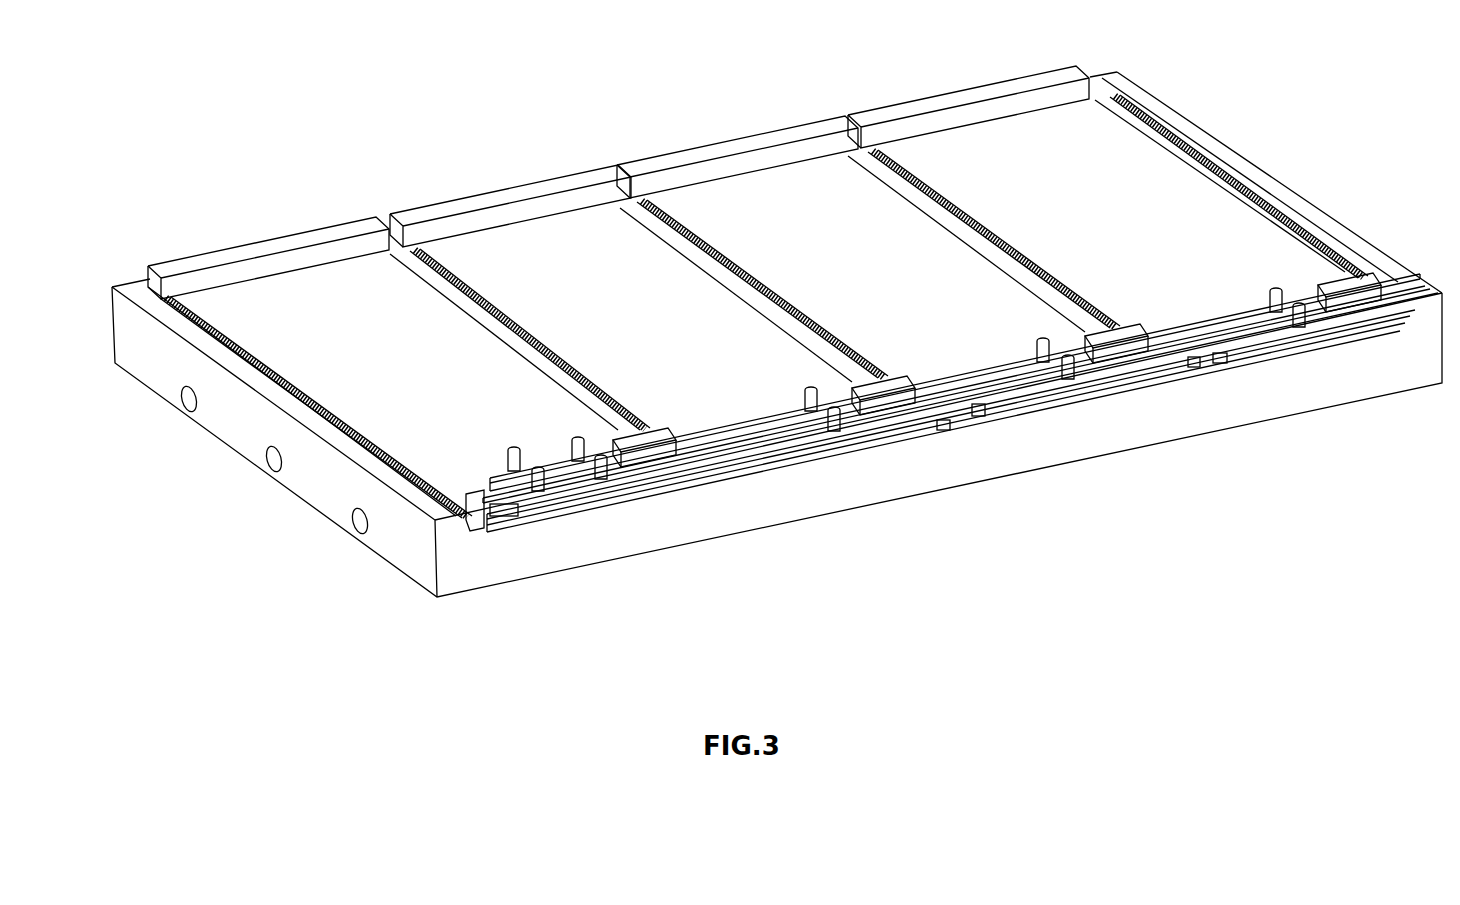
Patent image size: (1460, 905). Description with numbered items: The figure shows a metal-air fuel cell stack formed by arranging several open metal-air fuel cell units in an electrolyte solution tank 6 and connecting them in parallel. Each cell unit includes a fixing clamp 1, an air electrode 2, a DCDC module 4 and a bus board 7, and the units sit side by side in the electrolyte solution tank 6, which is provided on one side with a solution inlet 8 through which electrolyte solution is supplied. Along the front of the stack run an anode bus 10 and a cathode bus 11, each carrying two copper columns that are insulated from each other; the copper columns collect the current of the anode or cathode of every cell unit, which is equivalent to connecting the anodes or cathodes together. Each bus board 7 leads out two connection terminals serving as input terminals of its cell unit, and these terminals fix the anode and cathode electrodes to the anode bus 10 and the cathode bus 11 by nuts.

The fixing clamp 1 is at (205, 249).
The air electrode 2 is at (1092, 152).
The DCDC module 4 is at (648, 465).
The electrolyte solution tank 6 is at (746, 492).
The bus board 7 is at (481, 528).
The solution inlet 8 is at (345, 540).
The anode bus 10 is at (802, 458).
The cathode bus 11 is at (1258, 335).